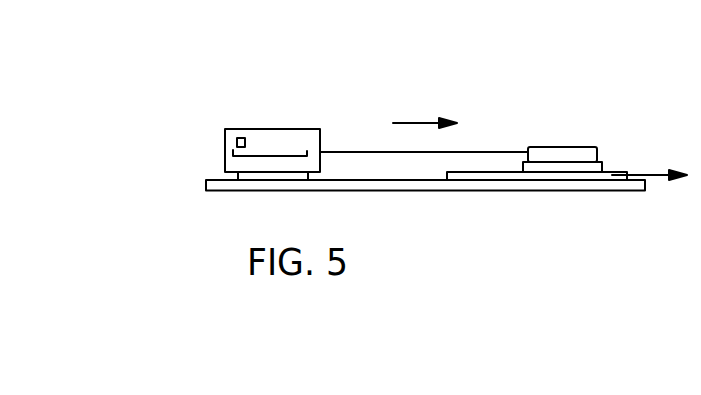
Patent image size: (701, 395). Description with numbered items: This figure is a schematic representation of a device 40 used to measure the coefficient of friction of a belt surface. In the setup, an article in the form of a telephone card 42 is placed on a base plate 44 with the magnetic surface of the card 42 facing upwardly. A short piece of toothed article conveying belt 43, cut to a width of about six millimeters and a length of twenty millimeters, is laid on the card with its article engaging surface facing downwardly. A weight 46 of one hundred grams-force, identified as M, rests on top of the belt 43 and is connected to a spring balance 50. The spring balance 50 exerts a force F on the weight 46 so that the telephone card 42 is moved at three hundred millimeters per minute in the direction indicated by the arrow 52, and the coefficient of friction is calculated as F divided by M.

The device 40 is at (561, 146).
The telephone card 42 is at (481, 172).
The toothed article conveying belt 43 is at (575, 166).
The base plate 44 is at (508, 188).
The weight 46 is at (570, 147).
The spring balance 50 is at (268, 138).
The arrow 52 is at (420, 122).